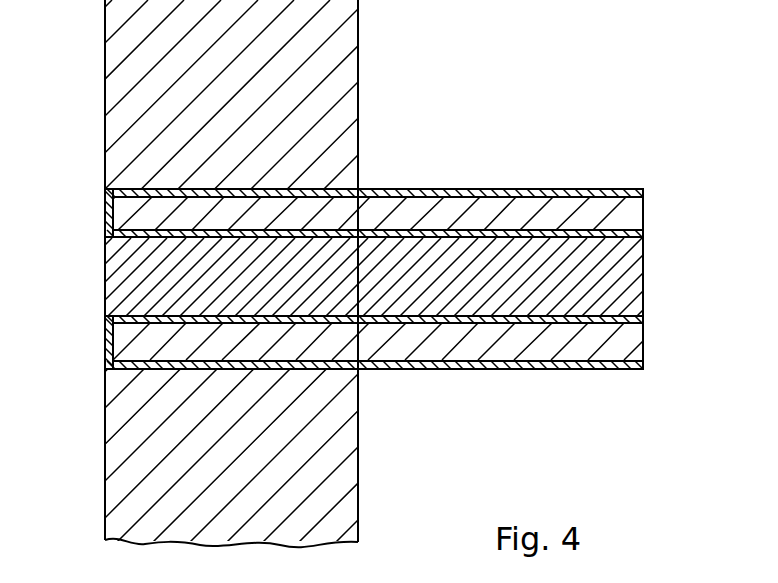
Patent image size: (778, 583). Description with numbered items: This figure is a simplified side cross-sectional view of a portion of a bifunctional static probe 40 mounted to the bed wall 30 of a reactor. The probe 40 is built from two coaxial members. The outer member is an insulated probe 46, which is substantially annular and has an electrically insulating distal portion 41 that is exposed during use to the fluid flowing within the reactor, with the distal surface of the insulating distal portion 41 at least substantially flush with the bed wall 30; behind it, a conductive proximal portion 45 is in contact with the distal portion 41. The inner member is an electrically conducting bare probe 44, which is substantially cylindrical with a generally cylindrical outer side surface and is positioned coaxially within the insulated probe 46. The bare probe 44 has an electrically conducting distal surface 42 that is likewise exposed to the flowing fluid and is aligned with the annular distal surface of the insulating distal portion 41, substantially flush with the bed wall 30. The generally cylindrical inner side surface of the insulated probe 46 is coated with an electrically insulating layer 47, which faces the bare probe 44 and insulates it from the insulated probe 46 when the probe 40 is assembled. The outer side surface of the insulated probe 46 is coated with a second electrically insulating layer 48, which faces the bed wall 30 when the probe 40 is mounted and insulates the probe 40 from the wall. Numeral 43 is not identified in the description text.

The bed wall 30 is at (105, 32).
The bifunctional static probe 40 is at (593, 170).
The electrically insulating distal portion 41 is at (105, 212).
The electrically conducting distal surface 42 is at (105, 270).
The sheet layer 43 is at (643, 194).
The electrically conducting bare probe 44 is at (658, 279).
The conductive proximal portion 45 is at (460, 343).
The insulated probe 46 is at (457, 178).
The electrically insulating layer 47 is at (590, 240).
The electrically insulating layer 48 is at (369, 196).